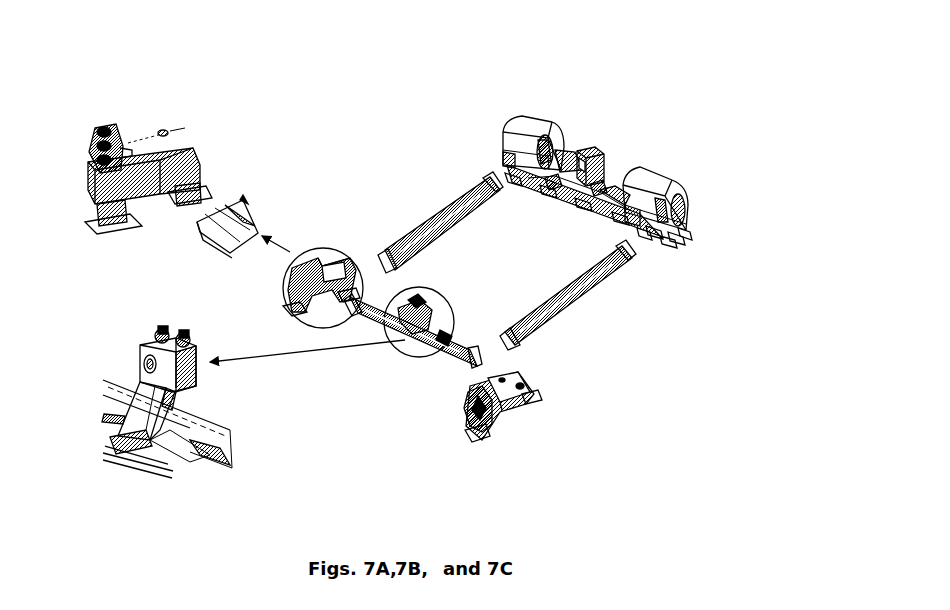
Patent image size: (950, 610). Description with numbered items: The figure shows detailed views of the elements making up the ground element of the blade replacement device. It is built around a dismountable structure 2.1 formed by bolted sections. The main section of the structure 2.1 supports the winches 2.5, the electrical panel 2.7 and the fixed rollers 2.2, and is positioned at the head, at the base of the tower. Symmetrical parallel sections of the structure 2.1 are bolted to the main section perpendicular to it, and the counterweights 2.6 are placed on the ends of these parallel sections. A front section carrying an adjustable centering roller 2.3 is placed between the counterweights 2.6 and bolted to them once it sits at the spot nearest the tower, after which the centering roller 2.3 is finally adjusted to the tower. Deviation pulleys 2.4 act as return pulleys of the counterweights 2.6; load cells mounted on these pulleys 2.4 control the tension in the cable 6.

In FIG. 7A, the structure 2.1 is at (568, 280).
In FIG. 7A, the fixed rollers 2.2 is at (626, 250).
In FIG. 7C, the centering roller 2.3 is at (155, 342).
In FIG. 7B, the deviation pulleys 2.4 is at (97, 126).
In FIG. 7A, the deviation pulleys 2.4 is at (480, 410).
In FIG. 7A, the winches 2.5 is at (537, 130).
In FIG. 7B, the counterweight 2.6 is at (162, 150).
In FIG. 7A, the counterweight 2.6 is at (530, 393).
In FIG. 7A, the electrical panel 2.7 is at (596, 150).
In FIG. 7C, the cable 6 is at (160, 465).